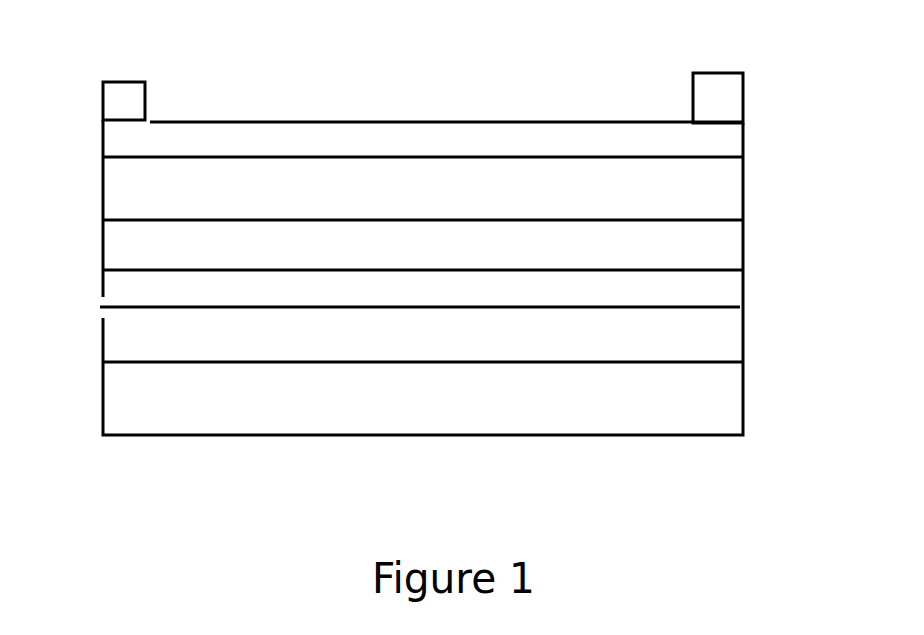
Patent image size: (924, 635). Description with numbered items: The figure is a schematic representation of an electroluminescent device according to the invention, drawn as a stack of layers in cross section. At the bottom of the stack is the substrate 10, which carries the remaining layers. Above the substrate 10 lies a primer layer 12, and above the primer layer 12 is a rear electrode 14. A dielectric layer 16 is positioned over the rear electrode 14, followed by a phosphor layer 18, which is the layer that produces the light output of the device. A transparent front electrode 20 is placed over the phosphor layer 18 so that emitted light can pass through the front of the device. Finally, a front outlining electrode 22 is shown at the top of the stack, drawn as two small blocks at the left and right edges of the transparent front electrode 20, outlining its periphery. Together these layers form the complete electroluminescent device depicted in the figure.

The substrate 10 is at (738, 395).
The primer layer 12 is at (748, 328).
The rear electrode 14 is at (738, 293).
The dielectric layer 16 is at (752, 248).
The phosphor layer 18 is at (748, 182).
The transparent front electrode 20 is at (760, 143).
The front outlining electrode 22 is at (88, 102).